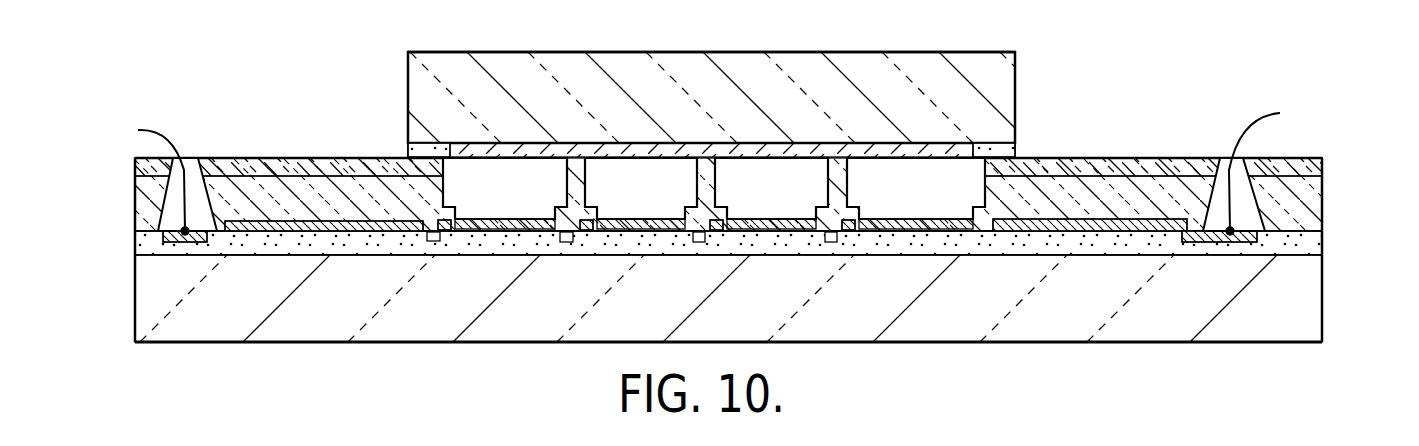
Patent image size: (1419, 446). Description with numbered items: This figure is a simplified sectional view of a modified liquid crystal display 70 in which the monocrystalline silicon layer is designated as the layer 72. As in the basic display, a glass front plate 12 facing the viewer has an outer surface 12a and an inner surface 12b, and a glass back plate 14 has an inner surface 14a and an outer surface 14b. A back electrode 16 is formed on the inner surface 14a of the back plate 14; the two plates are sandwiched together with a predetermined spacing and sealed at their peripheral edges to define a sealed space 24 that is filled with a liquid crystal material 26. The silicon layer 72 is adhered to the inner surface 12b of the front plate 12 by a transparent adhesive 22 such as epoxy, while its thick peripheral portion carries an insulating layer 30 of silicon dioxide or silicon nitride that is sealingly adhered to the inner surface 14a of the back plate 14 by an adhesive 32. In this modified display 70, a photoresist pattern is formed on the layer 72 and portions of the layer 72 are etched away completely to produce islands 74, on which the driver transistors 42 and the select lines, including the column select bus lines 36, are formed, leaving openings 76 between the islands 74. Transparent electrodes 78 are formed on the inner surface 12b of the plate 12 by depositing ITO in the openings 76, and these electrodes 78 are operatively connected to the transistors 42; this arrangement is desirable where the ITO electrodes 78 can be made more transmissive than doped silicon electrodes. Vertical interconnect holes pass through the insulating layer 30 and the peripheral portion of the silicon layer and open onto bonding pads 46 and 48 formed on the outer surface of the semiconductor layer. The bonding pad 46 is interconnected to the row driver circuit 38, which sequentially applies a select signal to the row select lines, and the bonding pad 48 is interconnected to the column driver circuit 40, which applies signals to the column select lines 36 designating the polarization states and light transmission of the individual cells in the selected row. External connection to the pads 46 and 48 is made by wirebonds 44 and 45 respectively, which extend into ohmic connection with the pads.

The modified liquid crystal display 70 is at (240, 100).
The glass front plate 12 is at (1322, 300).
The outer surface of the front plate 12a is at (1213, 343).
The inner surface of the front plate 12b is at (1305, 246).
The glass back plate 14 is at (1015, 90).
The inner surface of the back plate 14a is at (1003, 143).
The outer surface of the back plate 14b is at (903, 52).
The back electrode 16 is at (512, 143).
The transparent adhesive 22 is at (273, 243).
The sealed space 24 is at (881, 187).
The liquid crystal material 26 is at (975, 187).
The insulating layer 30 is at (1322, 160).
The adhesive 32 is at (407, 151).
The column select bus lines 36 is at (830, 244).
The row driver circuit 38 is at (337, 235).
The column driver circuit 40 is at (1060, 233).
The driver transistors 42 is at (853, 233).
The wirebond 44 is at (163, 132).
The wirebond 45 is at (1258, 115).
The bonding pad 46 is at (226, 238).
The bonding pad 48 is at (1215, 243).
The monocrystalline silicon layer 72 is at (1322, 195).
The islands 74 is at (828, 206).
The openings 76 is at (916, 208).
The transparent electrodes 78 is at (910, 233).